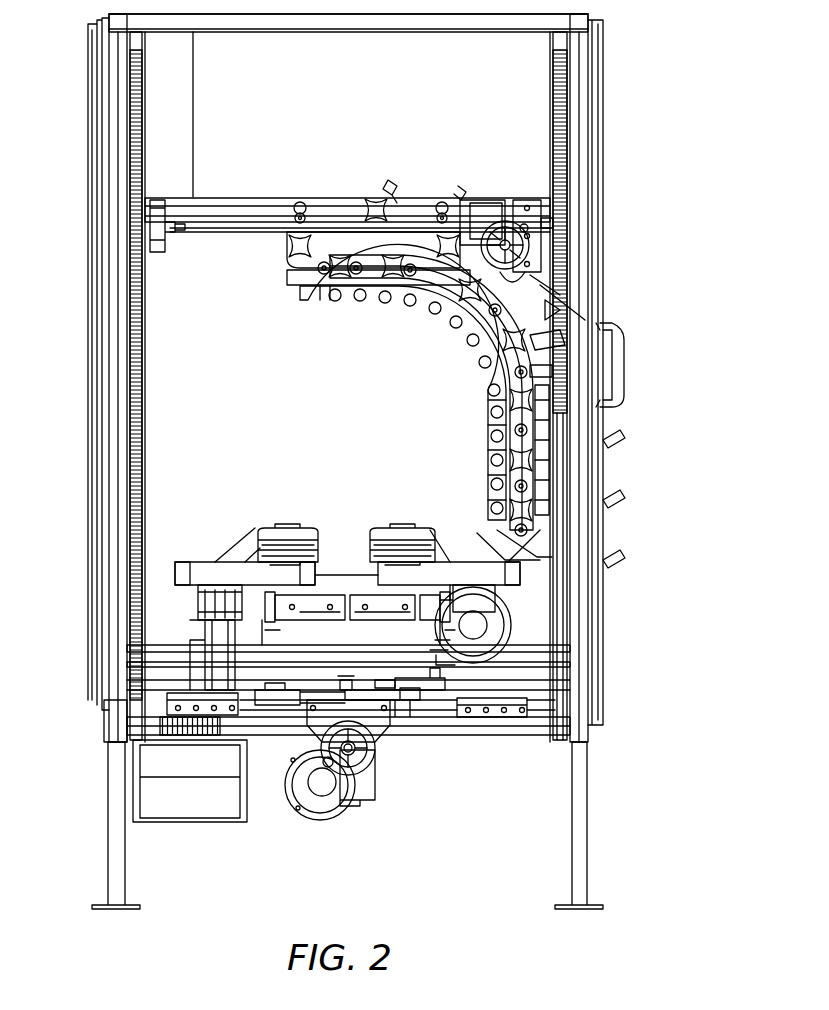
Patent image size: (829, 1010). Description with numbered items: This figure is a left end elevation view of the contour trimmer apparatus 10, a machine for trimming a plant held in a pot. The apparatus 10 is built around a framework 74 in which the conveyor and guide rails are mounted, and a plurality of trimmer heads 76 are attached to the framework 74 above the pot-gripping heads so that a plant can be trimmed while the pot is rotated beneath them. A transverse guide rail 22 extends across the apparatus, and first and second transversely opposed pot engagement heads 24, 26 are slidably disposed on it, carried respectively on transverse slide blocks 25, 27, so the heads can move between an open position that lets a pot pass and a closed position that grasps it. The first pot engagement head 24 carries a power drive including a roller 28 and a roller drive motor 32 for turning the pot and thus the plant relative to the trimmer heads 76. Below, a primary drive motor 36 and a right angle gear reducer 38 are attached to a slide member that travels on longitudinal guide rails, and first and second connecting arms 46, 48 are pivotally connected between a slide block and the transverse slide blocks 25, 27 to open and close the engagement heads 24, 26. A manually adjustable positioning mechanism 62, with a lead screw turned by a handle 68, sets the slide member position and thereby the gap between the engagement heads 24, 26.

The contour trimmer apparatus 10 is at (670, 63).
The framework 74 is at (590, 130).
The trimmer heads 76 is at (432, 320).
The roller 28 is at (300, 530).
The first pot engagement head 24 is at (208, 573).
The second pot engagement head 26 is at (445, 577).
The roller drive motor 32 is at (205, 598).
The first transverse slide block 25 is at (170, 705).
The second transverse slide block 27 is at (493, 710).
The second connecting arm 48 is at (445, 680).
The transverse guide rail 22 is at (425, 715).
The first connecting arm 46 is at (275, 690).
The primary drive motor 36 is at (322, 818).
The right angle gear reducer 38 is at (365, 787).
The manually adjustable positioning mechanism 62 is at (370, 750).
The handle 68 is at (370, 750).